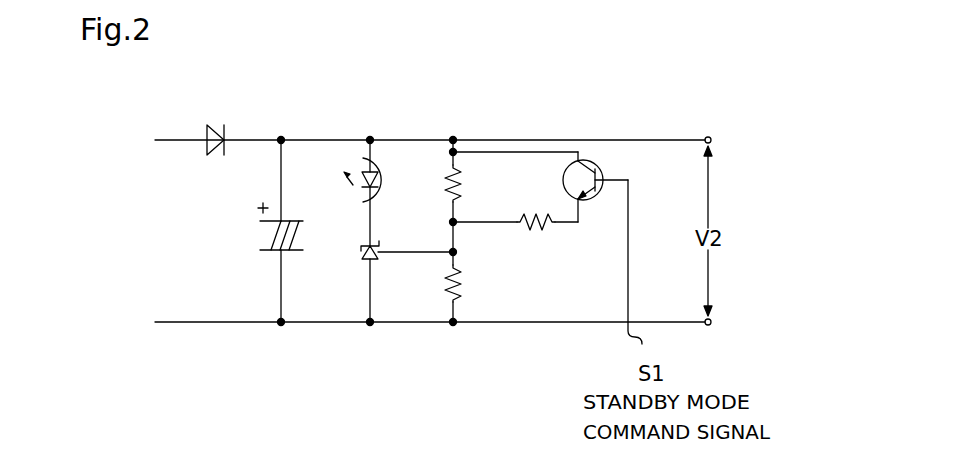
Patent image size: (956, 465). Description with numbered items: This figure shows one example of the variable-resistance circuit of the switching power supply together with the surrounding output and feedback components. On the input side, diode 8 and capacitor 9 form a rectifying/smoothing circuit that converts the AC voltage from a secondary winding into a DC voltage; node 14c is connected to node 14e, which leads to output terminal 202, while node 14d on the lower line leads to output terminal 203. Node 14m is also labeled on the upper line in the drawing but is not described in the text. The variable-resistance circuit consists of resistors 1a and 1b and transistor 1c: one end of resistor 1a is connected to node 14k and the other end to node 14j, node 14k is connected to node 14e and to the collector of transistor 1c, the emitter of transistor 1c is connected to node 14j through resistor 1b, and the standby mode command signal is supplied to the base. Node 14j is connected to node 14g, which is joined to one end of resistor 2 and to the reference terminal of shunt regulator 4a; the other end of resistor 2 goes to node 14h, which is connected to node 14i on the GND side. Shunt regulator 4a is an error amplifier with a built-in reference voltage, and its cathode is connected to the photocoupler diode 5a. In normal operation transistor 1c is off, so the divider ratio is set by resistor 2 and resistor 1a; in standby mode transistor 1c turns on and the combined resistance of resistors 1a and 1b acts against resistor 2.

The diode 8 is at (221, 124).
The capacitor 9 is at (257, 236).
The node 14c is at (283, 137).
The node 14d is at (279, 326).
The node 14m is at (371, 137).
The node 14i is at (369, 326).
The node 14e is at (454, 137).
The node 14k is at (450, 153).
The node 14g is at (452, 246).
The node 14j is at (456, 228).
The node 14h is at (452, 326).
The light emitting diode 5a is at (358, 197).
The shunt regulator 4a is at (358, 258).
The resistor 1a is at (468, 184).
The resistor 1b is at (548, 238).
The transistor 1c is at (600, 163).
The resistor 2 is at (466, 283).
The output terminal 202 is at (708, 136).
The output terminal 203 is at (711, 326).